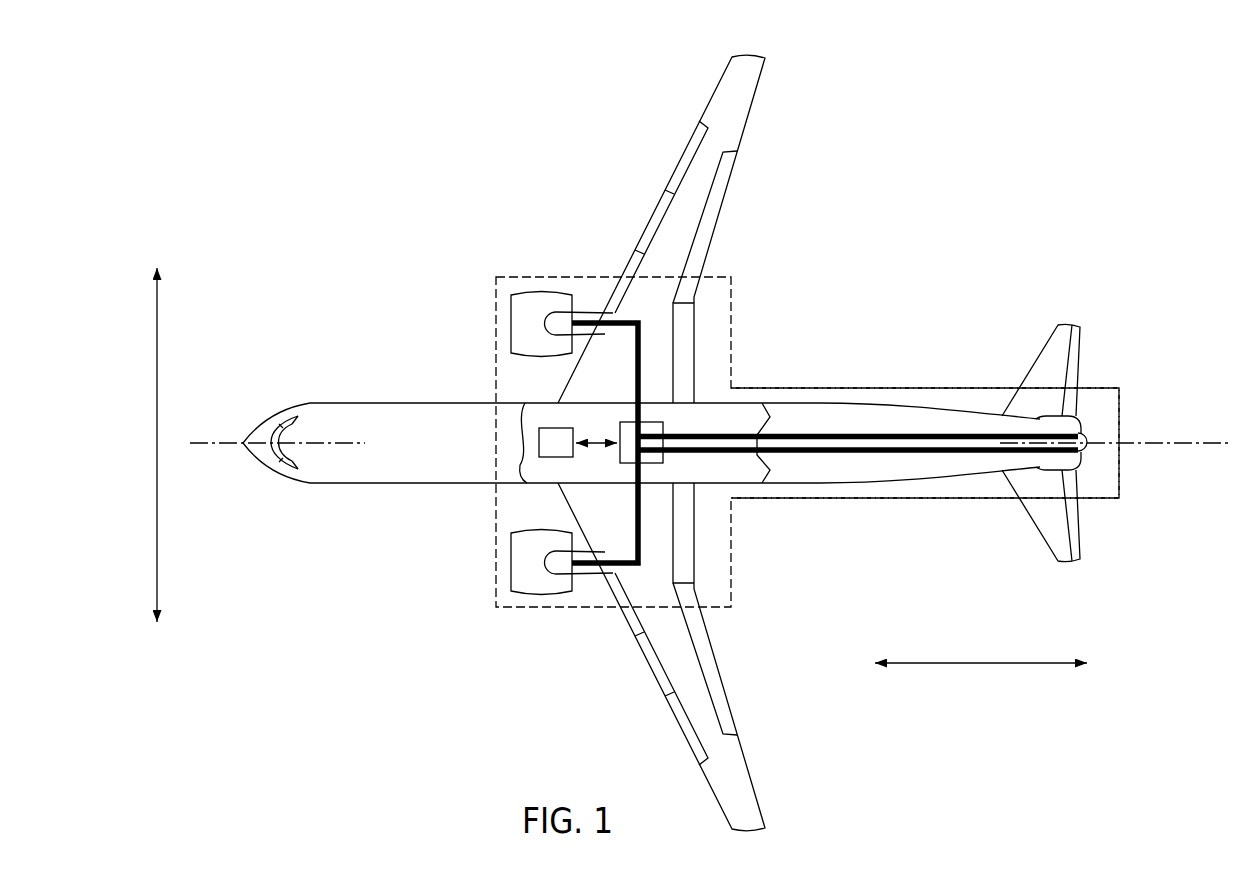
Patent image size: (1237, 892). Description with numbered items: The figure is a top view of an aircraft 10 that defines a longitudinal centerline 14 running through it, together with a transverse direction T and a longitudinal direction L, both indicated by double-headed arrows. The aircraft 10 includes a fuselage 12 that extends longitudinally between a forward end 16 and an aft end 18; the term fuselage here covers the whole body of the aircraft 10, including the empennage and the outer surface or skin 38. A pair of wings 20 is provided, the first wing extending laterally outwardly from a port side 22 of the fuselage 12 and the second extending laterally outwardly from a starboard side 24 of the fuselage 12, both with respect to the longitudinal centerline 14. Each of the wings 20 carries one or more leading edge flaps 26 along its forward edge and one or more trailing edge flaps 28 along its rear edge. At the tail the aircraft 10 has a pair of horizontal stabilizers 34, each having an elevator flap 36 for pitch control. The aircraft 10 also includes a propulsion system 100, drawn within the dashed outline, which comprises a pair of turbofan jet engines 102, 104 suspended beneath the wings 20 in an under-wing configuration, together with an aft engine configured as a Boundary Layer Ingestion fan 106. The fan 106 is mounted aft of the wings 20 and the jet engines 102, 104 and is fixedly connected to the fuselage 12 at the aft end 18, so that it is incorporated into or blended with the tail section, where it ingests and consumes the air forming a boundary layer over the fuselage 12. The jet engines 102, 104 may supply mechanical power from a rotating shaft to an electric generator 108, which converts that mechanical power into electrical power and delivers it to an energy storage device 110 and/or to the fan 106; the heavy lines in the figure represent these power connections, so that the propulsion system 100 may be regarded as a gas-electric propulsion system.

The aircraft 10 is at (927, 204).
The fuselage 12 is at (307, 467).
The longitudinal centerline 14 is at (213, 442).
The forward end 16 is at (240, 456).
The aft end 18 is at (1026, 528).
The wings 20 is at (750, 73).
The port side 22 is at (411, 494).
The starboard side 24 is at (395, 391).
The leading edge flaps 26 is at (657, 678).
The trailing edge flaps 28 is at (725, 682).
The horizontal stabilizers 34 is at (1063, 335).
The elevator flap 36 is at (1080, 338).
The outer surface or skin 38 is at (877, 461).
The propulsion system 100 is at (880, 387).
The turbofan jet engine 102 is at (533, 578).
The turbofan jet engine 104 is at (533, 302).
The Boundary Layer Ingestion fan 106 is at (1073, 409).
The electric generator 108 is at (663, 425).
The energy storage device 110 is at (541, 458).
The transverse direction T is at (157, 312).
The longitudinal direction L is at (983, 662).